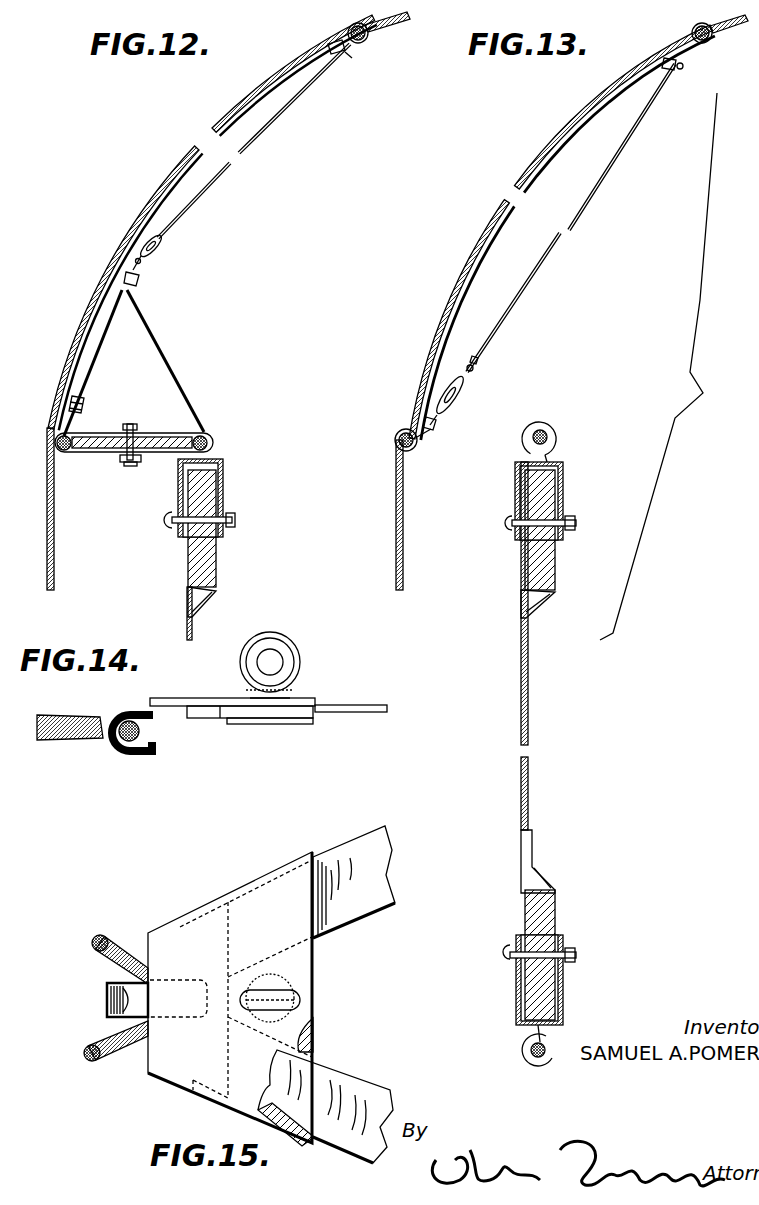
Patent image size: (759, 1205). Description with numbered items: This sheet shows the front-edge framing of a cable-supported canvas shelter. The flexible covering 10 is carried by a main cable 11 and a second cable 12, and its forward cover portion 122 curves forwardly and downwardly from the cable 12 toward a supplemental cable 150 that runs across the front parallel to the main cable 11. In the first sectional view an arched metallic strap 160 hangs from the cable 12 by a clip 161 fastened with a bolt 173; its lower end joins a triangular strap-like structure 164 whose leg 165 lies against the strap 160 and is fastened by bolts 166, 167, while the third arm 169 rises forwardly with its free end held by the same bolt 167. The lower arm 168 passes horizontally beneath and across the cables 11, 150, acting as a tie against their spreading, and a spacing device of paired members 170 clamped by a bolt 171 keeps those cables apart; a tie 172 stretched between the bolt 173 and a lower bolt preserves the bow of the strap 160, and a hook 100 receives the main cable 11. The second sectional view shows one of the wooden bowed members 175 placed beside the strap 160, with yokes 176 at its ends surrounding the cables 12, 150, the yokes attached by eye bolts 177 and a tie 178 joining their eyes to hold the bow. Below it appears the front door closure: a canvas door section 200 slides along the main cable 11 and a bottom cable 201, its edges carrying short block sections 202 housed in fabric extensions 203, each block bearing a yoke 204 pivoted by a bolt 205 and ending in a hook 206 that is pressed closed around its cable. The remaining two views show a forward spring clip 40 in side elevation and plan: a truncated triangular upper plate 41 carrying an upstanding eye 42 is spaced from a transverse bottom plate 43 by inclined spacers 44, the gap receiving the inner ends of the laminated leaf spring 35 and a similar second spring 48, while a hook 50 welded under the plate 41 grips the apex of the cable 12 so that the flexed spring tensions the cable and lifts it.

In FIG. 12, the flexible covering 10 is at (390, 20).
In FIG. 13, the flexible covering 10 is at (592, 97).
In FIG. 12, the main cable 11 is at (208, 432).
In FIG. 13, the main cable 11 is at (550, 435).
In FIG. 12, the cable 12 is at (359, 45).
In FIG. 13, the cable 12 is at (715, 30).
In FIG. 14, the cable 12 is at (80, 741).
In FIG. 15, the cable 12 is at (97, 960).
In FIG. 15, the laminated leaf spring 35 is at (358, 1082).
In FIG. 14, the spring clip 40 is at (168, 692).
In FIG. 15, the spring clip 40 is at (191, 905).
In FIG. 14, the upper plate 41 is at (206, 706).
In FIG. 15, the upper plate 41 is at (312, 958).
In FIG. 14, the upstanding eye 42 is at (290, 641).
In FIG. 15, the upstanding eye 42 is at (298, 998).
In FIG. 14, the bottom plate 43 is at (305, 724).
In FIG. 15, the bottom plate 43 is at (316, 1040).
In FIG. 14, the spacers 44 is at (219, 724).
In FIG. 15, the spacers 44 is at (181, 921).
In FIG. 15, the second spring 48 is at (352, 847).
In FIG. 14, the hook 50 is at (129, 710).
In FIG. 15, the hook 50 is at (107, 998).
In FIG. 12, the hook 100 is at (232, 522).
In FIG. 12, the forward cover portion 122 is at (195, 173).
In FIG. 13, the forward cover portion 122 is at (469, 255).
In FIG. 12, the supplemental cable 150 is at (63, 455).
In FIG. 13, the supplemental cable 150 is at (396, 447).
In FIG. 12, the arched metallic strap 160 is at (252, 104).
In FIG. 12, the clip 161 is at (350, 58).
In FIG. 12, the triangular strap-like structure 164 is at (168, 358).
In FIG. 12, the leg 165 is at (96, 320).
In FIG. 12, the bolt 166 is at (72, 398).
In FIG. 12, the bolt 167 is at (140, 278).
In FIG. 12, the lower arm 168 is at (108, 458).
In FIG. 12, the third arm 169 is at (190, 410).
In FIG. 12, the spacing members 170 is at (167, 432).
In FIG. 12, the bolt 171 is at (128, 424).
In FIG. 12, the tie 172 is at (242, 154).
In FIG. 12, the bolt 173 is at (332, 56).
In FIG. 13, the bowed members 175 is at (500, 230).
In FIG. 13, the yokes 176 is at (712, 44).
In FIG. 13, the eye bolts 177 is at (680, 70).
In FIG. 13, the tie 178 is at (537, 276).
In FIG. 13, the door sections 200 is at (520, 676).
In FIG. 13, the bottom cable 201 is at (550, 1041).
In FIG. 13, the block sections 202 is at (548, 548).
In FIG. 13, the fabric extension 203 is at (545, 612).
In FIG. 13, the yoke 204 is at (565, 486).
In FIG. 13, the bolt 205 is at (577, 523).
In FIG. 13, the hook 206 is at (557, 441).